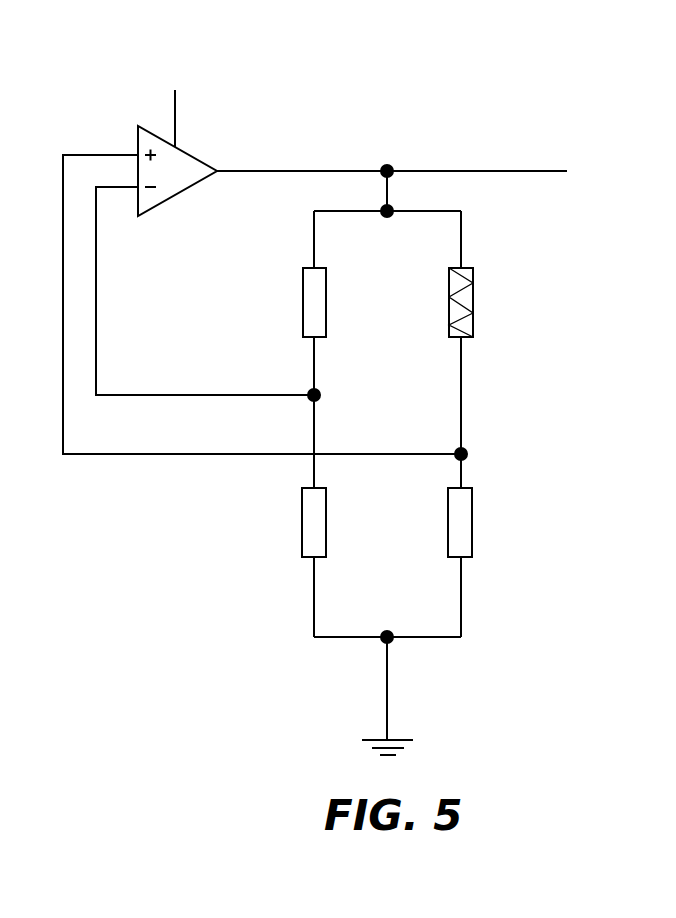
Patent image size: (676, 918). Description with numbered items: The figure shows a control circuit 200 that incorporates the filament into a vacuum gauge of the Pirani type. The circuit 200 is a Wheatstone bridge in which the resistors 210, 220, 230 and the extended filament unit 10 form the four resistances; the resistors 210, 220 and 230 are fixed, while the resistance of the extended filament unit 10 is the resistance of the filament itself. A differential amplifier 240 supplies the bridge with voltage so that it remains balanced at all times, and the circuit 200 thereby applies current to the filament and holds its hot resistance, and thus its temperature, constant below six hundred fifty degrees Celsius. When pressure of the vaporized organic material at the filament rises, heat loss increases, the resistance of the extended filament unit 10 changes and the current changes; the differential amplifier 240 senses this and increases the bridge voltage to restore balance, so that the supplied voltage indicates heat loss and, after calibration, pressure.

The control circuit 200 is at (334, 402).
The differential amplifier 240 is at (184, 183).
The resistor 210 is at (308, 312).
The extended filament unit 10 is at (468, 310).
The resistor 220 is at (307, 528).
The resistor 230 is at (466, 528).